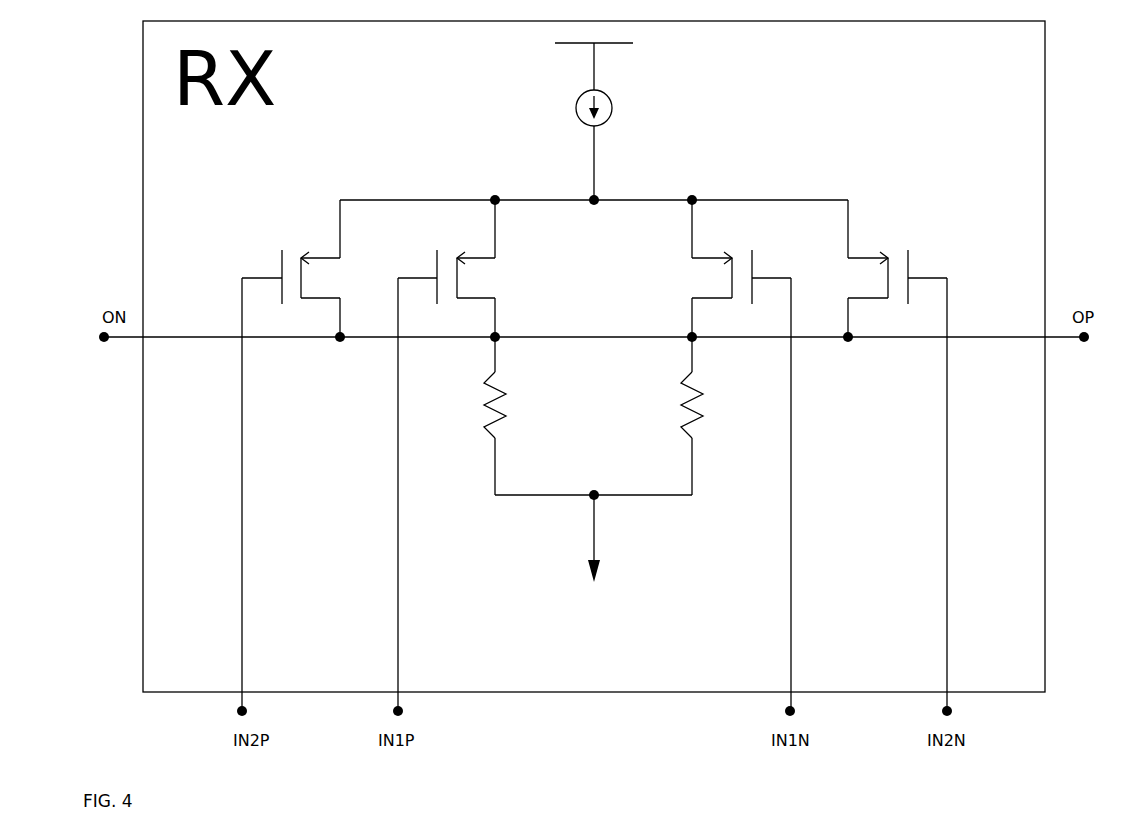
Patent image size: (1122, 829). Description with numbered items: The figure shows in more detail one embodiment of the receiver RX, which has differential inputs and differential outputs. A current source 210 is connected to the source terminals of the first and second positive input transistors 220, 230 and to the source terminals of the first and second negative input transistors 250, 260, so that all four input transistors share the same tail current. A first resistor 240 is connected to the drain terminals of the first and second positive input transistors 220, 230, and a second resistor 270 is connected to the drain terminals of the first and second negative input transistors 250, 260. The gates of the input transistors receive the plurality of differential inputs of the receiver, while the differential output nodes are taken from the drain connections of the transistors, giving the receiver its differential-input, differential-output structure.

The current source 210 is at (619, 121).
The first positive input transistor 220 is at (271, 455).
The second positive input transistor 230 is at (436, 455).
The first resistor 240 is at (467, 416).
The first negative input transistor 250 is at (741, 455).
The second negative input transistor 260 is at (897, 455).
The second resistor 270 is at (718, 416).